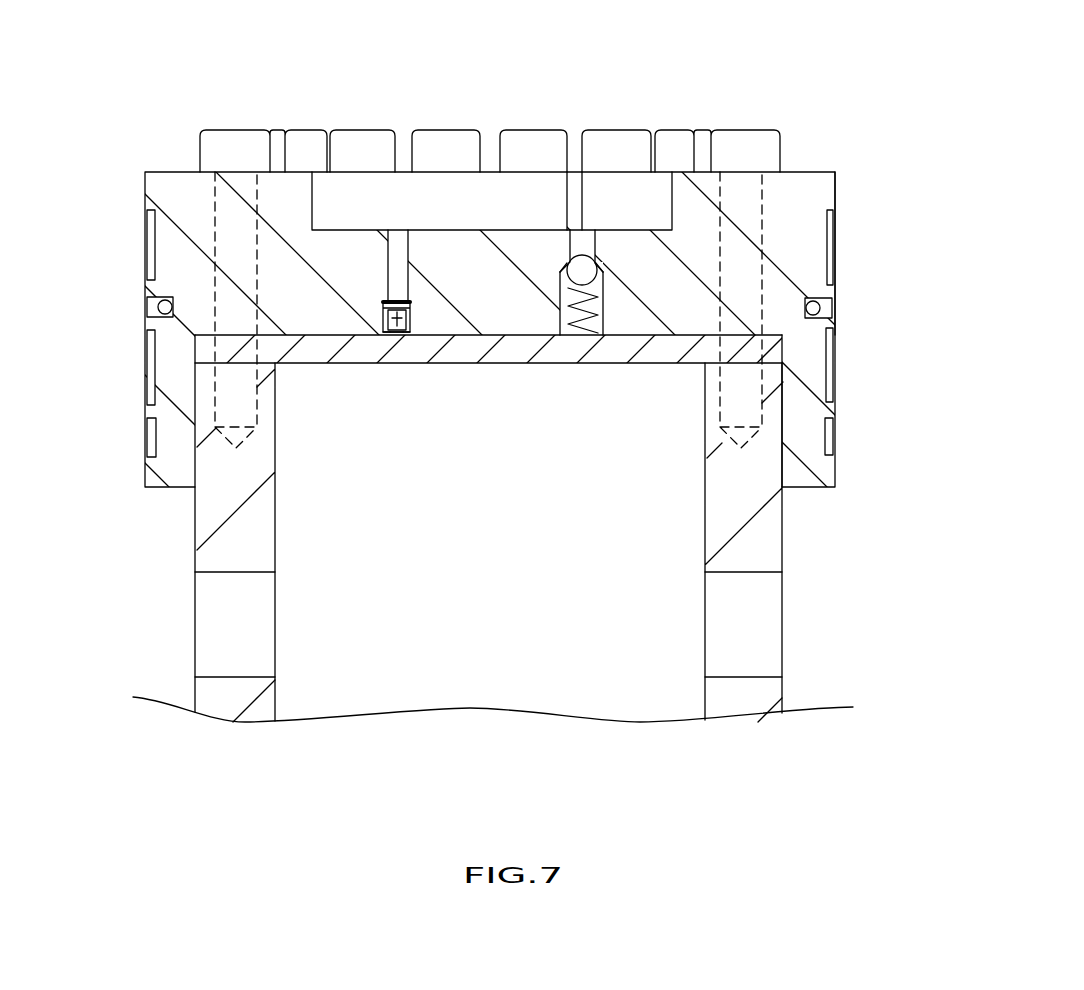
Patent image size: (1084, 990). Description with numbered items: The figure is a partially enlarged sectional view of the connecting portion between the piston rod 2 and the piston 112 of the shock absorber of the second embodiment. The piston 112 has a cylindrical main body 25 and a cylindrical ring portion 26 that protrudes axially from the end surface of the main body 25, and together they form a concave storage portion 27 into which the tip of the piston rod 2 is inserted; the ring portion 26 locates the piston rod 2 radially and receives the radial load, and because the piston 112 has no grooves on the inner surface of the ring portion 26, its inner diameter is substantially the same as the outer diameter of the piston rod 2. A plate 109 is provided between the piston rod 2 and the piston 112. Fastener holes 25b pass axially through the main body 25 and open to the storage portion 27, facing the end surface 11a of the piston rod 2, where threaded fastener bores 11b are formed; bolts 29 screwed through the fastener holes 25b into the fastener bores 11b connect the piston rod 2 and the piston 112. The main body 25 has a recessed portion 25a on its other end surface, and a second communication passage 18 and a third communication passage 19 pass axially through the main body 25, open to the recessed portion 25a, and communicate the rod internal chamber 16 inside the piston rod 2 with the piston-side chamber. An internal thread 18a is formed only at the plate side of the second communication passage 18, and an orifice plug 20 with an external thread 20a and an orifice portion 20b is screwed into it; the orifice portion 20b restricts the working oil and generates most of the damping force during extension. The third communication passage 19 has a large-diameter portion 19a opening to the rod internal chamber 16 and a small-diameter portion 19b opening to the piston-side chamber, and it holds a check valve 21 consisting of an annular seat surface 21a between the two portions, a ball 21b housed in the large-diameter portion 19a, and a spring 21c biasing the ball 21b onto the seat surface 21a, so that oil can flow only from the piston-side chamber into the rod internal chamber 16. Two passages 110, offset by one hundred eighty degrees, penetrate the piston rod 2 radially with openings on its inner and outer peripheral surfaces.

The piston rod 2 is at (787, 697).
The end surface 11a is at (782, 355).
The fastener bore 11b is at (758, 412).
The rod internal chamber 16 is at (655, 532).
The second communication passage 18 is at (396, 272).
The internal thread 18a is at (402, 302).
The third communication passage 19 is at (640, 66).
The large-diameter portion 19a is at (567, 174).
The small-diameter portion 19b is at (584, 230).
The orifice plug 20 is at (449, 768).
The external thread 20a is at (383, 332).
The orifice portion 20b is at (405, 332).
The check valve 21 is at (915, 135).
The seat surface 21a is at (583, 262).
The ball 21b is at (597, 267).
The spring 21c is at (600, 292).
The main body 25 is at (790, 257).
The recessed portion 25a is at (635, 230).
The fastener hole 25b is at (722, 196).
The ring portion 26 is at (820, 465).
The storage portion 27 is at (240, 364).
The bolt 29 is at (237, 193).
The plate 109 is at (320, 338).
The passage 110 is at (250, 675).
The piston 112 is at (475, 101).